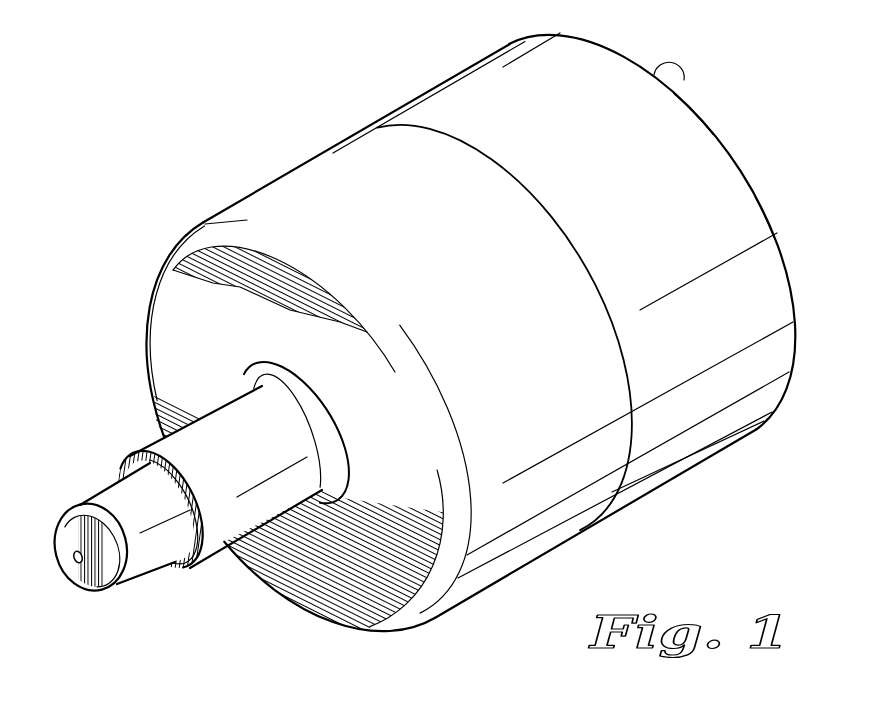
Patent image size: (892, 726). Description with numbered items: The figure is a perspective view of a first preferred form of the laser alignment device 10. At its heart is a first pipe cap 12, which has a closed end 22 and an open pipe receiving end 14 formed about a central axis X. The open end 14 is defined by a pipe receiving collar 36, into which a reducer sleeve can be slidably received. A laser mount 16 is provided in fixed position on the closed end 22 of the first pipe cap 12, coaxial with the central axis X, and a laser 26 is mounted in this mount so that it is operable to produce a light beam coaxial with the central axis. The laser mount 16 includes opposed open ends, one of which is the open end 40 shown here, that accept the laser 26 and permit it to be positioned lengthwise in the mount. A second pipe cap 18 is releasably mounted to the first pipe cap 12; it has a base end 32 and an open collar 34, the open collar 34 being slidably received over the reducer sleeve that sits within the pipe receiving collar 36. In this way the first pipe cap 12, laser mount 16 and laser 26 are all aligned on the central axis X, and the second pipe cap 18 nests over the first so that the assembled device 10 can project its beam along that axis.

The laser alignment device 10 is at (232, 70).
The first pipe cap 12 is at (258, 184).
The open pipe receiving end 14 is at (521, 182).
The laser mount 16 is at (152, 568).
The second pipe cap 18 is at (424, 88).
The closed end 22 is at (307, 583).
The laser 26 is at (113, 592).
The base end 32 is at (655, 71).
The open collar 34 is at (700, 432).
The pipe receiving collar 36 is at (510, 543).
The open end 40 is at (130, 467).